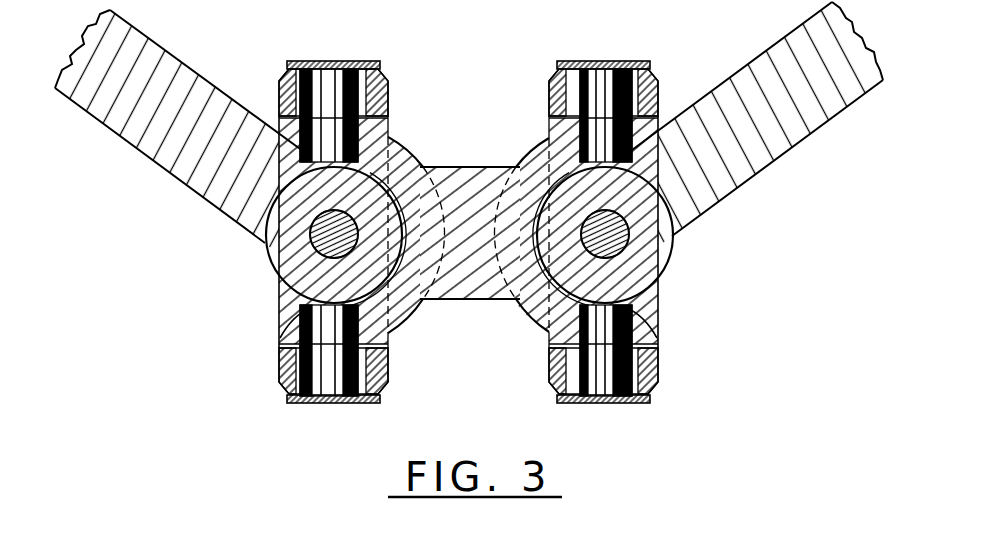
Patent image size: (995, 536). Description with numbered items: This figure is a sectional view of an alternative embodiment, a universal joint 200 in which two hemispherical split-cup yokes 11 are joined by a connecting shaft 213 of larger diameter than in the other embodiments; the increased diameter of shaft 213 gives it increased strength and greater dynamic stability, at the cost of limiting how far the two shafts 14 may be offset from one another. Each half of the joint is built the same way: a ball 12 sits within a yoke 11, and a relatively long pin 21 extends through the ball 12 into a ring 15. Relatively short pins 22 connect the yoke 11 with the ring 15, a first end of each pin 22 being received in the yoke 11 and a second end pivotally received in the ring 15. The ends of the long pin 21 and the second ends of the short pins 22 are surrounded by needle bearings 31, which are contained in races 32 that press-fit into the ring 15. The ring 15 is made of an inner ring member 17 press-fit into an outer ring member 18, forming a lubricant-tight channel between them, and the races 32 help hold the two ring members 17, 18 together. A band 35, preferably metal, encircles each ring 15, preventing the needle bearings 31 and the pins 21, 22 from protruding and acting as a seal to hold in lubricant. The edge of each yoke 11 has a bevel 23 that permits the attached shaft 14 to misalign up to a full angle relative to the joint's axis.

The universal joint 200 is at (497, 268).
The hemispherical split-cup yoke 11 is at (413, 317).
The ball 12 is at (268, 247).
The shaft 14 is at (196, 189).
The ring 15 is at (278, 100).
The inner ring member 17 is at (390, 362).
The outer ring member 18 is at (388, 78).
The pin 21 is at (268, 283).
The pin 22 is at (303, 60).
The bevel 23 is at (298, 312).
The needle bearings 31 is at (297, 62).
The races 32 is at (272, 108).
The band 35 is at (360, 58).
The shaft 213 is at (477, 167).